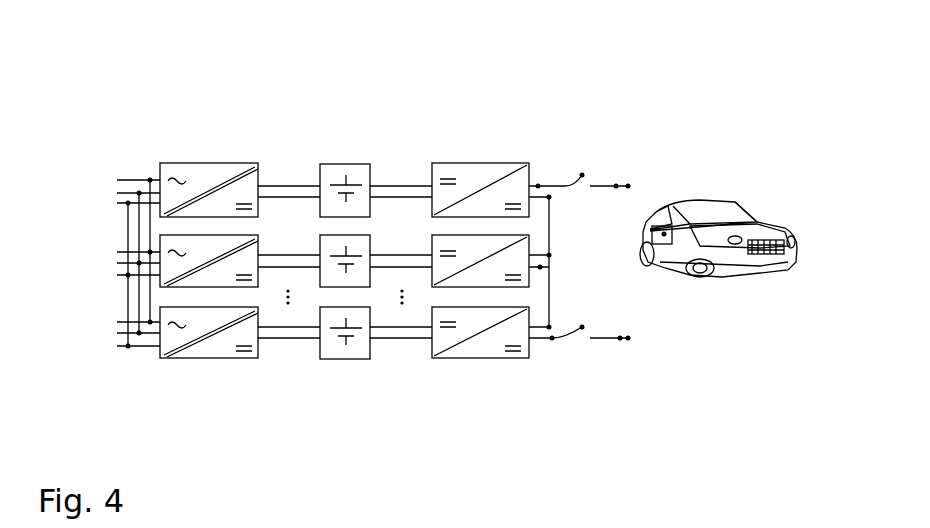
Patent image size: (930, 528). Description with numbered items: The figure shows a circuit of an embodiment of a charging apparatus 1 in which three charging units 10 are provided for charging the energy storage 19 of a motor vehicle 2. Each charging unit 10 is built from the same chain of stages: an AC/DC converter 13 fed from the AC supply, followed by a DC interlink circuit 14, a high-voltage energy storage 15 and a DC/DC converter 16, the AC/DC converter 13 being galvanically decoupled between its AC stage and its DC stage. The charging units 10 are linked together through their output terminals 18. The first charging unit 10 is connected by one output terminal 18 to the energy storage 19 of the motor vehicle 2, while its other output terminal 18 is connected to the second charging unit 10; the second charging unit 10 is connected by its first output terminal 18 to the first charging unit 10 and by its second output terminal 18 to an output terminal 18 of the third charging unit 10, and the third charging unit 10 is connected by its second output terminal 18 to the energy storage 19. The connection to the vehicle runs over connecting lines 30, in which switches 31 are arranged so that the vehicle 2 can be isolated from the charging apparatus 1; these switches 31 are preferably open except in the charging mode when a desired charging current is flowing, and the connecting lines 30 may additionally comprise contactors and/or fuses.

The charging apparatus 1 is at (647, 100).
The motor vehicle 2 is at (750, 230).
The charging unit 10 is at (516, 137).
The AC/DC converter 13 is at (198, 180).
The DC interlink circuit 14 is at (287, 185).
The high-voltage energy storage 15 is at (360, 171).
The DC/DC converter 16 is at (475, 174).
The output terminal 18 is at (549, 196).
The energy storage of the motor vehicle 19 is at (664, 245).
The connecting line 30 is at (617, 185).
The switch 31 is at (583, 174).